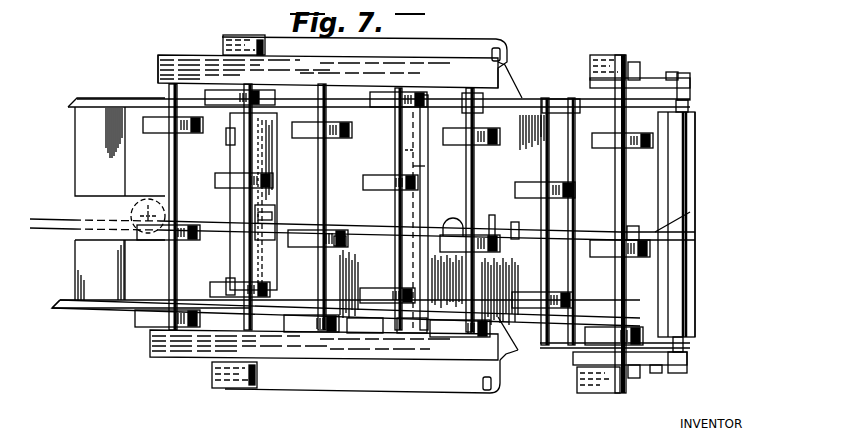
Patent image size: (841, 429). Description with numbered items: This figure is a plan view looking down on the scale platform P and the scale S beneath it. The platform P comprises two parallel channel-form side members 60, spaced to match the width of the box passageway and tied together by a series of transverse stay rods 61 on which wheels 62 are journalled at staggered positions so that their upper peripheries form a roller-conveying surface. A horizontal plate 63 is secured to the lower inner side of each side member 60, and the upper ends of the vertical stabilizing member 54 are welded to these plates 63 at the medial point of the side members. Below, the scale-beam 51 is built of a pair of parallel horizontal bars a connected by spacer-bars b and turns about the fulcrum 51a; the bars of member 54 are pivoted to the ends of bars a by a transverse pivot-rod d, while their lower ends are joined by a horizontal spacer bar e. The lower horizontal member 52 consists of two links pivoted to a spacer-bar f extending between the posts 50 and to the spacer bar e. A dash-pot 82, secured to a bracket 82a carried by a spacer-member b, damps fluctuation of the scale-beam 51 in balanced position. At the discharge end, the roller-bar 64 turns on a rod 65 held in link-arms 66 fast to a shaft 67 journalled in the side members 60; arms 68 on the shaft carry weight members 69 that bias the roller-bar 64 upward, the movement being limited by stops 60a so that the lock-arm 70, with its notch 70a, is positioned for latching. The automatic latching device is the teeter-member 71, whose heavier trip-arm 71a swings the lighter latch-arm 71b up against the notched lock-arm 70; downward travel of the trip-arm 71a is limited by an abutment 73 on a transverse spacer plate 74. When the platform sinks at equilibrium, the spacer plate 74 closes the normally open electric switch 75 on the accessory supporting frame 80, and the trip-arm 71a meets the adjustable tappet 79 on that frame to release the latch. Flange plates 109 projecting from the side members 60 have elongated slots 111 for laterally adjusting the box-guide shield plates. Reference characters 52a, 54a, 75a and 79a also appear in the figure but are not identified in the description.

The posts 50 is at (227, 138).
The scale-beam 51 is at (120, 99).
The fulcrum 51a is at (272, 148).
The lower horizontal member 52 is at (210, 222).
The shaft block 52a is at (263, 215).
The vertical stabilizing member 54 is at (426, 96).
The rod collar 54a is at (346, 240).
The side members 60 is at (207, 56).
The stops 60a is at (648, 78).
The stay rods 61 is at (243, 262).
The wheels 62 is at (222, 178).
The horizontal plate 63 is at (352, 91).
The roller-bar 64 is at (697, 175).
The rod 65 is at (690, 105).
The link-arms 66 is at (692, 88).
The shaft 67 is at (680, 78).
The arm 68 is at (668, 72).
The weight member 69 is at (615, 58).
The lock-arm 70 is at (648, 238).
The notch 70a is at (655, 232).
The teeter-member 71 is at (576, 250).
The trip-arm portion 71a is at (450, 250).
The latch-arm portion 71b is at (636, 226).
The abutment 73 is at (492, 214).
The transverse spacer plate 74 is at (512, 355).
The electric switch 75 is at (515, 240).
The bracket 75a is at (560, 98).
The adjustable tappet 79 is at (452, 218).
The bearing 79a is at (470, 338).
The accessory supporting frame 80 is at (522, 93).
The dash-pot 82 is at (148, 200).
The bracket 82a is at (75, 210).
The flange plate 109 is at (470, 39).
The elongated slots 111 is at (258, 38).
The scale platform P is at (165, 47).
The scale S is at (94, 319).
The horizontal bars a is at (70, 102).
The spacer-bars b is at (75, 162).
The transverse pivot-rod d is at (420, 160).
The horizontal spacer bar e is at (418, 170).
The spacer-bar f is at (272, 170).